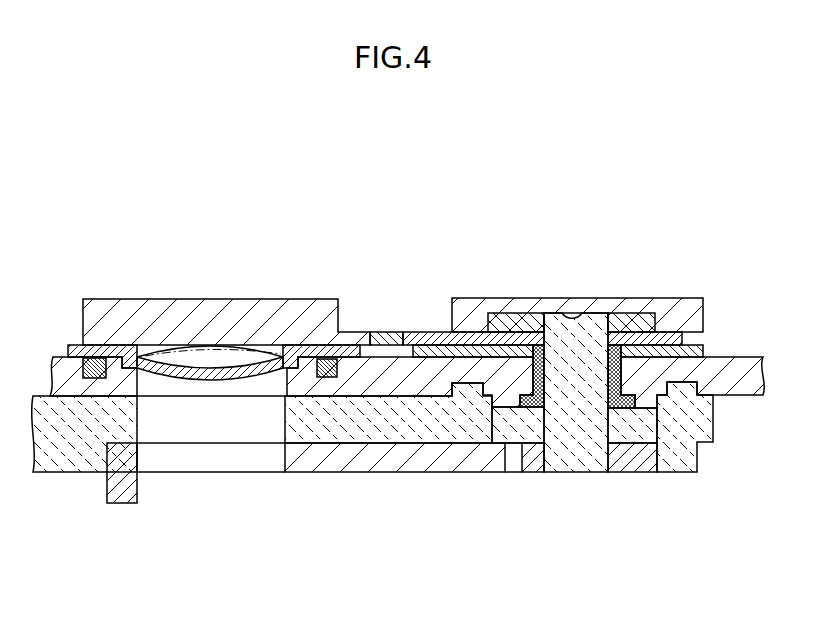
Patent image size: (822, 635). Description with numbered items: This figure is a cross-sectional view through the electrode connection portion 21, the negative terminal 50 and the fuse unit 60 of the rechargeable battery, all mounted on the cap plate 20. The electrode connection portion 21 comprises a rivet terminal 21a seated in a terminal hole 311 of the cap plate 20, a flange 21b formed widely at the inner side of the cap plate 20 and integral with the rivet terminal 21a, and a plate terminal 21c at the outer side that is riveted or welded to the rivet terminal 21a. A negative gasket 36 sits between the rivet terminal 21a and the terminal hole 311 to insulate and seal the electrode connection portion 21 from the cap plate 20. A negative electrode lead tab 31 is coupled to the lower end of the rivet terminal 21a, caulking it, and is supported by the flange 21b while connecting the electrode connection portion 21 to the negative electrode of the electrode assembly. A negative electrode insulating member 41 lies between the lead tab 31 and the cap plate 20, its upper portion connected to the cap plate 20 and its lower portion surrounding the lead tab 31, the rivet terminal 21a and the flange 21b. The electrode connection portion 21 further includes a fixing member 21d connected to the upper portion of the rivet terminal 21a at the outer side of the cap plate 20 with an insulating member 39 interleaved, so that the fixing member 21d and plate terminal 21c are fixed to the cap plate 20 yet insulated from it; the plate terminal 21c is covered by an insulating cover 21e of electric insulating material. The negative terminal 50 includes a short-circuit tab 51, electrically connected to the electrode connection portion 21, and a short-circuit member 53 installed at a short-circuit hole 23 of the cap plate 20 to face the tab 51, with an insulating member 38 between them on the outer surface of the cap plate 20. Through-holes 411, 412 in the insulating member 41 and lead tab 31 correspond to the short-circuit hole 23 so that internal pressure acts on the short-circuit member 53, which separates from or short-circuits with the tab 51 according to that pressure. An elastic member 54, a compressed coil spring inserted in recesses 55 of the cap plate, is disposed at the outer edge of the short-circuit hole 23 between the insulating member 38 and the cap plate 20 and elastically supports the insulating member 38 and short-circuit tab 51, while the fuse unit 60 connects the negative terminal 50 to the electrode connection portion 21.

The negative terminal 50 is at (213, 364).
The short-circuit tab 51 is at (148, 300).
The short-circuit member 53 is at (238, 378).
The elastic member 54 is at (318, 343).
The recesses 55 is at (305, 346).
The fuse unit 60 is at (386, 342).
The insulating member 38 is at (68, 344).
The cap plate 20 is at (63, 363).
The short-circuit hole 23 is at (268, 388).
The negative electrode insulating member 41 is at (277, 490).
The through-hole 411 is at (197, 433).
The through-hole 412 is at (153, 460).
The negative electrode lead tab 31 is at (120, 488).
The terminal hole 311 is at (558, 361).
The electrode connection portion 21 is at (570, 359).
The rivet terminal 21a is at (584, 437).
The flange 21b is at (646, 422).
The plate terminal 21c is at (630, 320).
The fixing member 21d is at (676, 336).
The insulating cover 21e is at (472, 310).
The negative gasket 36 is at (533, 400).
The insulating member 39 is at (689, 352).